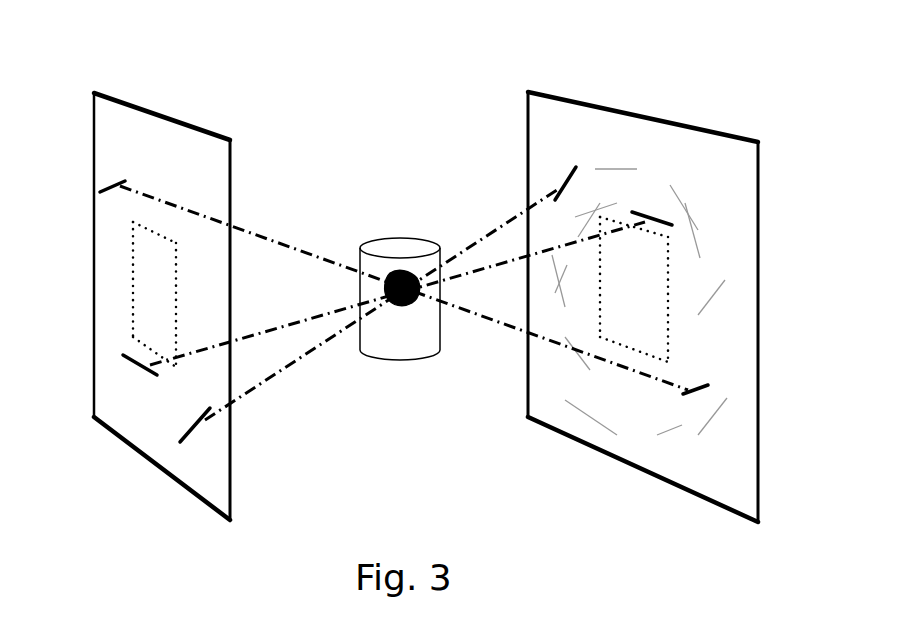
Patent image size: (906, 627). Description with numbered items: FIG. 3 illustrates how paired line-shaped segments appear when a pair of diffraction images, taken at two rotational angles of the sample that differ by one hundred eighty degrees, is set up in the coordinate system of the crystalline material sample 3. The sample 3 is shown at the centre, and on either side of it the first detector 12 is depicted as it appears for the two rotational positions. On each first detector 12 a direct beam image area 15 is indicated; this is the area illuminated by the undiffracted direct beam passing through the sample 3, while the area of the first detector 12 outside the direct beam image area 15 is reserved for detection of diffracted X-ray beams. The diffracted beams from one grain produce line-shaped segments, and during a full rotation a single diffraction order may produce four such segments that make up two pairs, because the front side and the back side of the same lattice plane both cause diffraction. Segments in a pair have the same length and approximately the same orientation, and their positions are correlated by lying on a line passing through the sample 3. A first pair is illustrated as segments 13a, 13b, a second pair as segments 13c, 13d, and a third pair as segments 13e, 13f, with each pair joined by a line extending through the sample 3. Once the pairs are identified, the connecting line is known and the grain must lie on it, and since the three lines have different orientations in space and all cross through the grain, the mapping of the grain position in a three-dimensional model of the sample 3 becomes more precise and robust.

The crystalline material sample 3 is at (403, 250).
The first detector 12 is at (158, 137).
The line-shaped segment 13a is at (105, 189).
The line-shaped segment 13b is at (698, 387).
The line-shaped segment 13c is at (147, 365).
The line-shaped segment 13d is at (637, 210).
The line-shaped segment 13e is at (192, 433).
The line-shaped segment 13f is at (570, 174).
The direct beam image area 15 is at (133, 308).